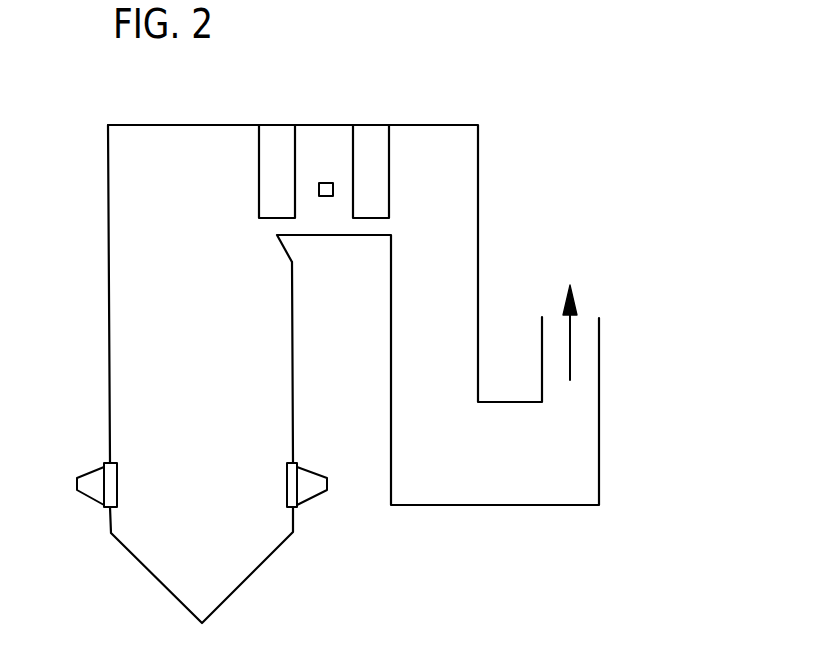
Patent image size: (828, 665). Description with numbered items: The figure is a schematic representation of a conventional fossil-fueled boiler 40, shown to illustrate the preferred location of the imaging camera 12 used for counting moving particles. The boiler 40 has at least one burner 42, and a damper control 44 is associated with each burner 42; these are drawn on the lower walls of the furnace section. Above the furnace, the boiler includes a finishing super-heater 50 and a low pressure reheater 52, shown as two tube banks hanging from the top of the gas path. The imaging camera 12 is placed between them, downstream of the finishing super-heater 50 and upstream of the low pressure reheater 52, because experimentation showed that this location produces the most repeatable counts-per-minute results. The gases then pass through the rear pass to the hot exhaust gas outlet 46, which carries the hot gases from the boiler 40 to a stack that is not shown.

The fossil-fueled boiler 40 is at (99, 113).
The finishing super-heater 50 is at (280, 128).
The low pressure reheater 52 is at (370, 128).
The imaging camera 12 is at (327, 182).
The damper control 44 is at (98, 463).
The burner 42 is at (110, 510).
The hot exhaust gas outlet 46 is at (568, 330).